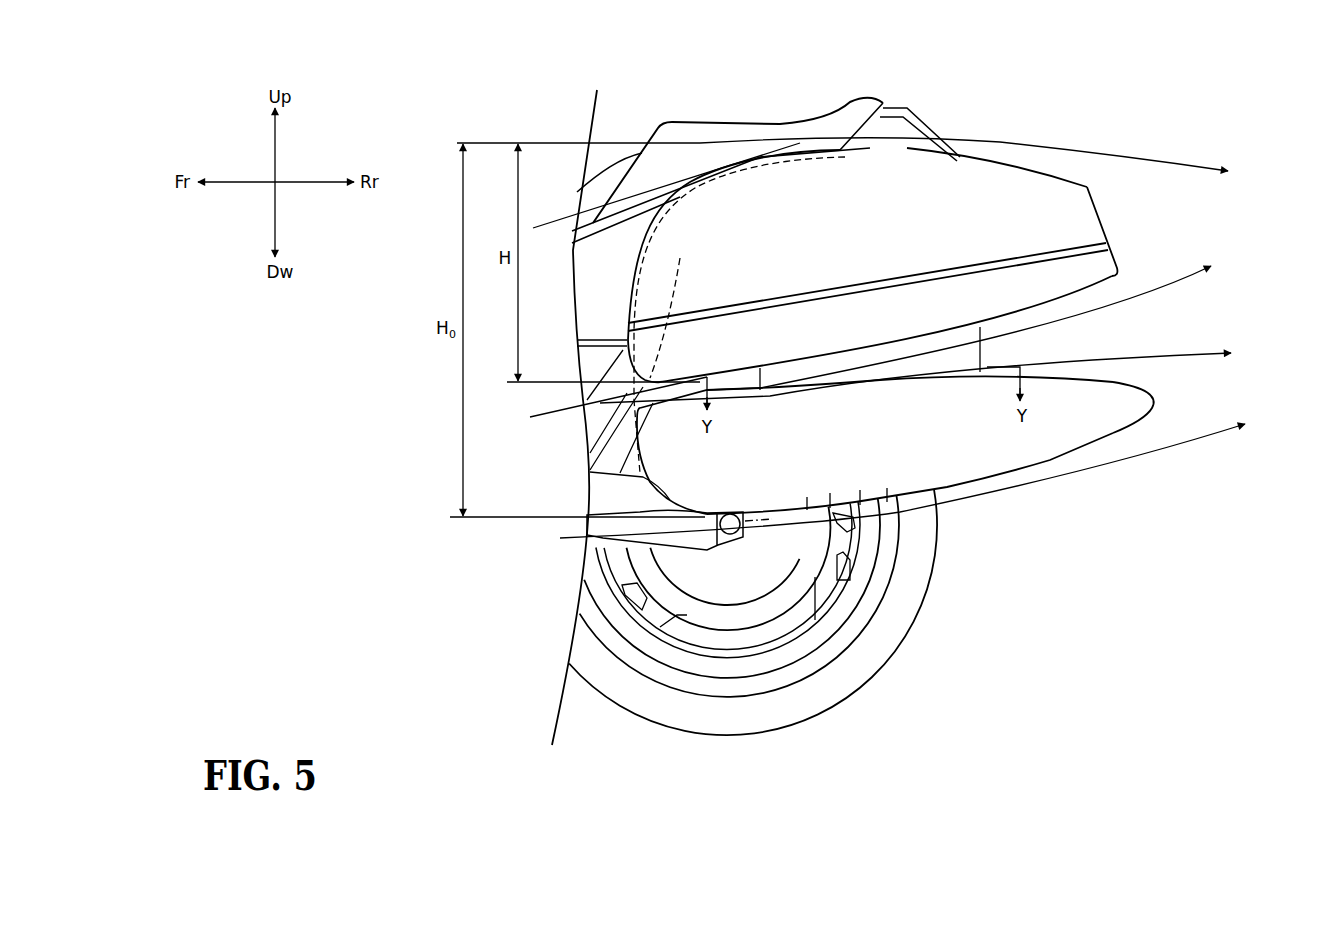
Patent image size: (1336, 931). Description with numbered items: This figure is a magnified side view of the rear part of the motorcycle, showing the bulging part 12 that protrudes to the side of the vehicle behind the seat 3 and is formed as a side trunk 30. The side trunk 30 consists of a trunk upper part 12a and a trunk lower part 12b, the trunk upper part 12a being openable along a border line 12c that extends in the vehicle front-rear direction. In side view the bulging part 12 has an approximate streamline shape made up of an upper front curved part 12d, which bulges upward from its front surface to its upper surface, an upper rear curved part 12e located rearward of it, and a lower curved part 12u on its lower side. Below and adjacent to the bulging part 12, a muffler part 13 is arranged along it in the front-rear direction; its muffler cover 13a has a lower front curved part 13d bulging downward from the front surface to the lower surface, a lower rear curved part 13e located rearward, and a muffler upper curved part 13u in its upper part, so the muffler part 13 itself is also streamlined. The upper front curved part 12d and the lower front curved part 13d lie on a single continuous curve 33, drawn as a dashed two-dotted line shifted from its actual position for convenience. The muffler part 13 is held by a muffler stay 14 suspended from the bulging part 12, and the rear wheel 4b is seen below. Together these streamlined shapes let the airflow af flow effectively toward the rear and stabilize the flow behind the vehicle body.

The seat 3 is at (612, 165).
The bulging part 12 is at (987, 182).
The side trunk 30 is at (895, 257).
The trunk upper part 12a is at (1047, 205).
The trunk lower part 12b is at (1083, 282).
The border line 12c is at (1057, 240).
The upper front curved part 12d is at (657, 213).
The upper rear curved part 12e is at (893, 168).
The lower curved part 12u is at (987, 322).
The muffler stay 14 is at (943, 345).
The single continuous curve 33 is at (674, 298).
The muffler part 13 is at (1054, 467).
The muffler cover 13a is at (1107, 420).
The muffler upper curved part 13u is at (920, 379).
The lower rear curved part 13e is at (945, 472).
The lower front curved part 13d is at (590, 524).
The rear wheel 4b is at (930, 572).
The airflow af is at (1145, 173).